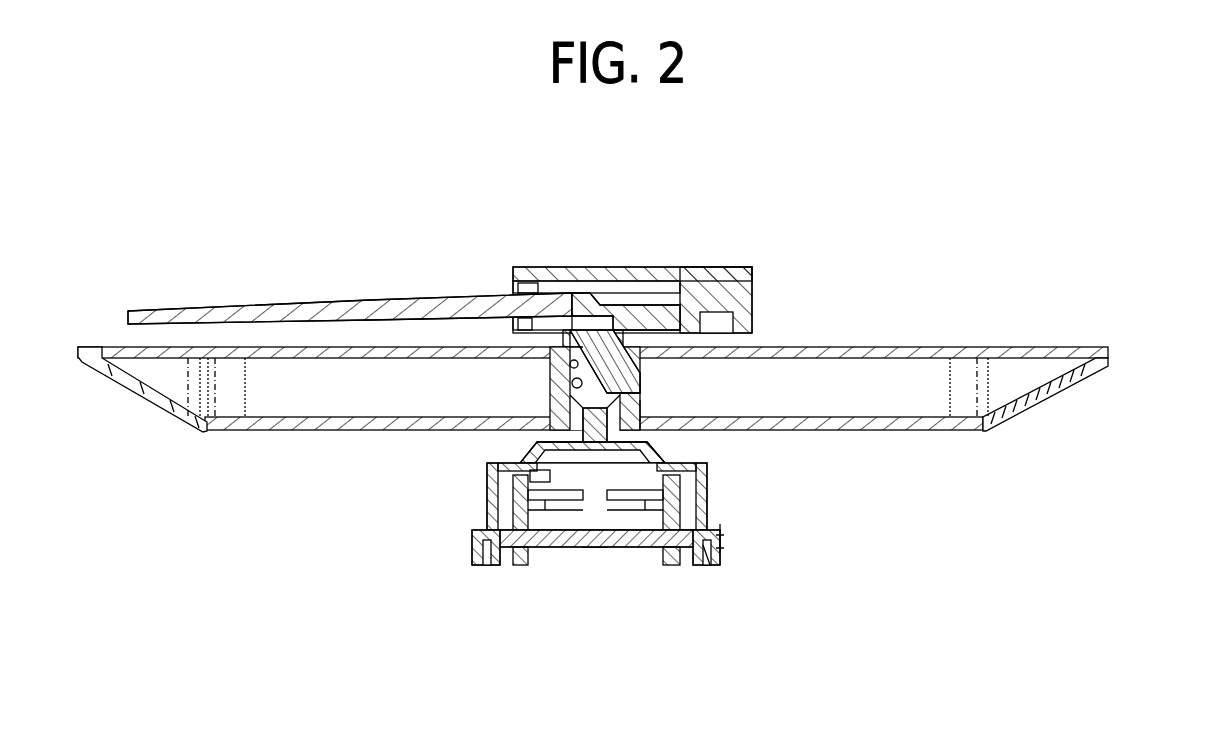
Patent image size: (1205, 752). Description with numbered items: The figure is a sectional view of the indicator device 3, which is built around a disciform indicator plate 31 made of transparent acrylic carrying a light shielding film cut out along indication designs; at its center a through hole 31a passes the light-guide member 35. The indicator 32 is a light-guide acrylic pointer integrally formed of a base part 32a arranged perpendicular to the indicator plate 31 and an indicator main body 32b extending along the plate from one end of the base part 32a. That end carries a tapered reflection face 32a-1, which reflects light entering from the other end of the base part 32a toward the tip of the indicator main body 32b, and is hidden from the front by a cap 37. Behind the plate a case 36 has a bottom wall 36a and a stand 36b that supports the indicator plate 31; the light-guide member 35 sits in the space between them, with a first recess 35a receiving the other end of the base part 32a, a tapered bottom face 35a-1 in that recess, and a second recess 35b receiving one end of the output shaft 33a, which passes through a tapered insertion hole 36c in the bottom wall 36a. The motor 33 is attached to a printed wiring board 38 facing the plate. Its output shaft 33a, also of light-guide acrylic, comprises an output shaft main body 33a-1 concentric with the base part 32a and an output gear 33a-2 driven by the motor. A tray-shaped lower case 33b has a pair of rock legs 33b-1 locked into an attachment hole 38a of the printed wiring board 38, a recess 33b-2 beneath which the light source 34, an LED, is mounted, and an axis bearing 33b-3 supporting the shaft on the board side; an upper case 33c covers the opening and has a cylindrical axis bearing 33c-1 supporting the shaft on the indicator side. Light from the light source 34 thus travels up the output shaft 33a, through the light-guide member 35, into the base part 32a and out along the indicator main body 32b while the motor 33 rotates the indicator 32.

The indicator device 3 is at (1004, 206).
The indicator plate 31 is at (1018, 353).
The through hole 31a is at (563, 340).
The indicator 32 is at (150, 311).
The base part 32a is at (637, 340).
The tapered reflection face 32a-1 is at (597, 320).
The indicator main body 32b is at (366, 300).
The motor 33 is at (450, 510).
The output shaft 33a is at (927, 440).
The output shaft main body 33a-1 is at (640, 443).
The output gear 33a-2 is at (703, 502).
The lower case 33b is at (483, 522).
The rock legs 33b-1 is at (487, 553).
The recess 33b-2 is at (620, 548).
The axis bearing 33b-3 is at (545, 548).
The upper case 33c is at (487, 473).
The axis bearing 33c-1 is at (537, 458).
The light source 34 is at (595, 548).
The light-guide member 35 is at (650, 383).
The first recess 35a is at (552, 379).
The bottom face 35a-1 is at (568, 367).
The second recess 35b is at (603, 422).
The case 36 is at (1062, 394).
The bottom wall 36a is at (888, 425).
The stand 36b is at (1032, 405).
The insertion hole 36c is at (545, 417).
The cap 37 is at (738, 268).
The printed wiring board 38 is at (728, 537).
The attachment hole 38a is at (702, 563).